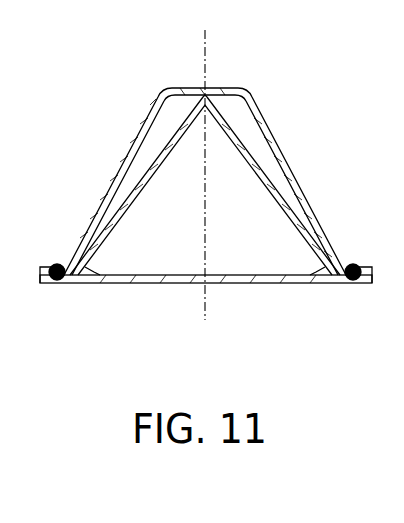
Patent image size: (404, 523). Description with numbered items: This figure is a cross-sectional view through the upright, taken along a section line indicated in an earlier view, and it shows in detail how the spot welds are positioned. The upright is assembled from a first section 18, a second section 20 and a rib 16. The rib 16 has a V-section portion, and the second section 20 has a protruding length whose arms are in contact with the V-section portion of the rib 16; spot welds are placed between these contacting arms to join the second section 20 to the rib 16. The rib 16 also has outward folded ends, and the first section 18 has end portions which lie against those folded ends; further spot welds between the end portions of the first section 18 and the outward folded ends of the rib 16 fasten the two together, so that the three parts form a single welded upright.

The rib 16 is at (261, 102).
The second section 20 is at (276, 181).
The first section 18 is at (247, 292).